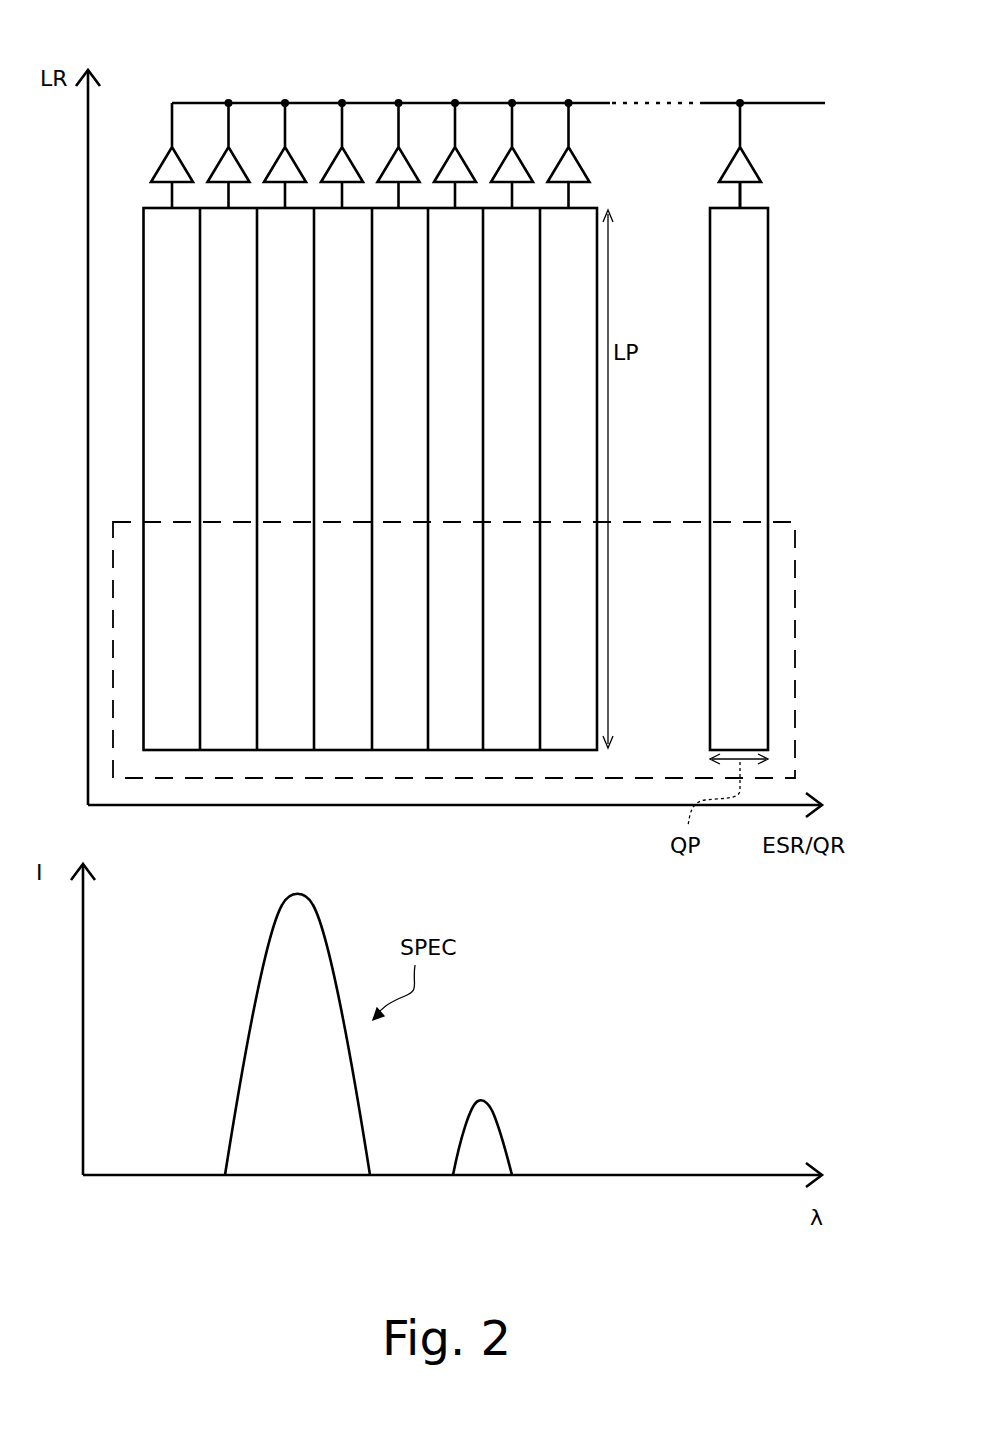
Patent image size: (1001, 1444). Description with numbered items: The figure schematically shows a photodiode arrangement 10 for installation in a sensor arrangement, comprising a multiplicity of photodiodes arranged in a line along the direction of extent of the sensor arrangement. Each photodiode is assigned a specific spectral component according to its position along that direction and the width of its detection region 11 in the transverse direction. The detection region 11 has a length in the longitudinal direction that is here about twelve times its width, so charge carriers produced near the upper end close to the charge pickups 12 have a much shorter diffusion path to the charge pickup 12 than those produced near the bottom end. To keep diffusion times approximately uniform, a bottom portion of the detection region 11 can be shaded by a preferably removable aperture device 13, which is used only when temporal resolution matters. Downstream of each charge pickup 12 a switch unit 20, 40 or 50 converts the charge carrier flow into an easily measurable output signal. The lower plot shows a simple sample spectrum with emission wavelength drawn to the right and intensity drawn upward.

The photodiode arrangement 10 is at (516, 424).
The detection region 11 is at (752, 366).
The charge pickup 12 is at (725, 201).
The aperture device 13 is at (797, 612).
The switch unit 20 is at (803, 155).
The switch unit 40 is at (803, 155).
The switch unit 50 is at (744, 166).